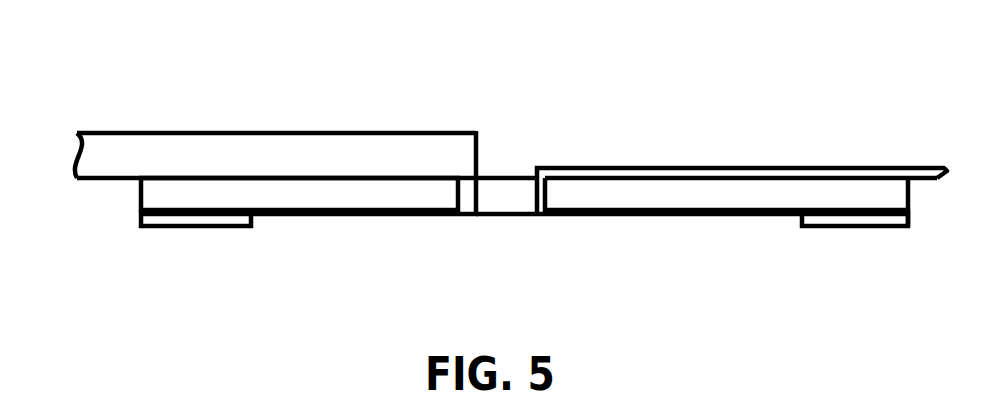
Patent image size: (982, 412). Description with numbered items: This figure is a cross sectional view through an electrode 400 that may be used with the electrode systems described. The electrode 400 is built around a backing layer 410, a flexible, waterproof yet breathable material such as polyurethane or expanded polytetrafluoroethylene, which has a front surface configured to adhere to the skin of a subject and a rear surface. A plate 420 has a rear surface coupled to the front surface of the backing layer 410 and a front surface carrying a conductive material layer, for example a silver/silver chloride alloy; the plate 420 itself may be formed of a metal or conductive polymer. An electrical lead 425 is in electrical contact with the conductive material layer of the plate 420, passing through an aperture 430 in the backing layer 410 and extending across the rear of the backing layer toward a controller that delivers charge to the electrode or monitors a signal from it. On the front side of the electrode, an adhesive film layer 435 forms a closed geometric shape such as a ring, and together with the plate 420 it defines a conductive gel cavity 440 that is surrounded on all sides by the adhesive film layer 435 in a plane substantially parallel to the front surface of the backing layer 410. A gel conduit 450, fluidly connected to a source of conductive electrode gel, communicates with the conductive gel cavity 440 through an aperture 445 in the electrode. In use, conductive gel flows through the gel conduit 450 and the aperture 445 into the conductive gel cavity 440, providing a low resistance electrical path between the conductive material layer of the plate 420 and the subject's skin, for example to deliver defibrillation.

The electrode 400 is at (618, 102).
The backing layer 410 is at (158, 192).
The plate 420 is at (682, 215).
The electrical lead 425 is at (732, 170).
The aperture 430 is at (537, 188).
The adhesive film layer 435 is at (170, 217).
The conductive gel cavity 440 is at (367, 227).
The aperture 445 is at (458, 212).
The gel conduit 450 is at (293, 168).